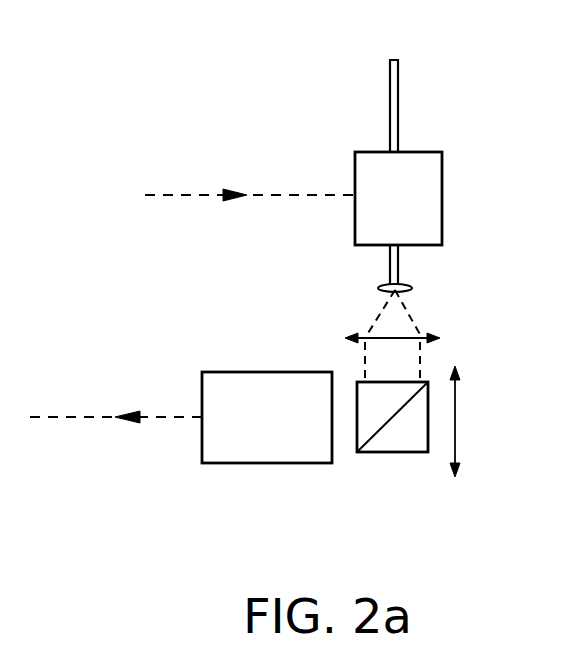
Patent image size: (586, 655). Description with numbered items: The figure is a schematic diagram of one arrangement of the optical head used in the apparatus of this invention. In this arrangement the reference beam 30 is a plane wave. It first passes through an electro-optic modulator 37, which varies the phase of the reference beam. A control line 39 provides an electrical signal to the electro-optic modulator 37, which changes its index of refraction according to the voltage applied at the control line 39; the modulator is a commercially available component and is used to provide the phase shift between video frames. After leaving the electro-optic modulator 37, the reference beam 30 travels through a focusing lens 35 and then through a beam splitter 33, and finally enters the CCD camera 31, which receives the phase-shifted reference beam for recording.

The support rod 30 is at (390, 72).
The detector 31 is at (202, 463).
The beam splitter cube 33 is at (374, 452).
The lens 35 is at (420, 285).
The light source housing 37 is at (442, 152).
The incident light beam 39 is at (215, 193).